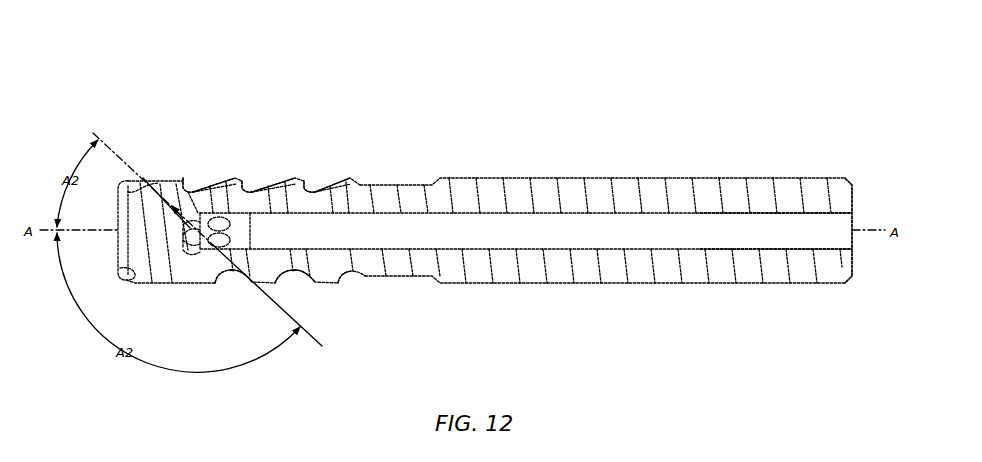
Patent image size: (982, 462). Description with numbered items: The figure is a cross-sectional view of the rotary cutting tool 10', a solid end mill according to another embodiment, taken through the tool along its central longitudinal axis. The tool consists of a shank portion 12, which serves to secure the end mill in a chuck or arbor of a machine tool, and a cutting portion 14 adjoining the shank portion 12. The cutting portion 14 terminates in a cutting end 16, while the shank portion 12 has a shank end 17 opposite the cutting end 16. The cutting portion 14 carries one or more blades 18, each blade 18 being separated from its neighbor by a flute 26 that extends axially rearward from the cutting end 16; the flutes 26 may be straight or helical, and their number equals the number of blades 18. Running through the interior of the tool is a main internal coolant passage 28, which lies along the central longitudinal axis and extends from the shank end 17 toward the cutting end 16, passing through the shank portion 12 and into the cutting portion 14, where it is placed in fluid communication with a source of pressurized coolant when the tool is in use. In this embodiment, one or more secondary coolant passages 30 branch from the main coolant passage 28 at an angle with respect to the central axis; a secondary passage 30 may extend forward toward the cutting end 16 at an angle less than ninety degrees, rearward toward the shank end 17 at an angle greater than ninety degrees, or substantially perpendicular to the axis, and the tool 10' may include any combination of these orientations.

The rotary cutting tool 10' is at (613, 72).
The shank portion 12 is at (670, 166).
The cutting portion 14 is at (298, 149).
The cutting end 16 is at (111, 202).
The shank end 17 is at (863, 206).
The blade 18 is at (184, 175).
The flute 26 is at (141, 169).
The main internal coolant passage 28 is at (838, 241).
The secondary coolant passage 30 is at (252, 254).